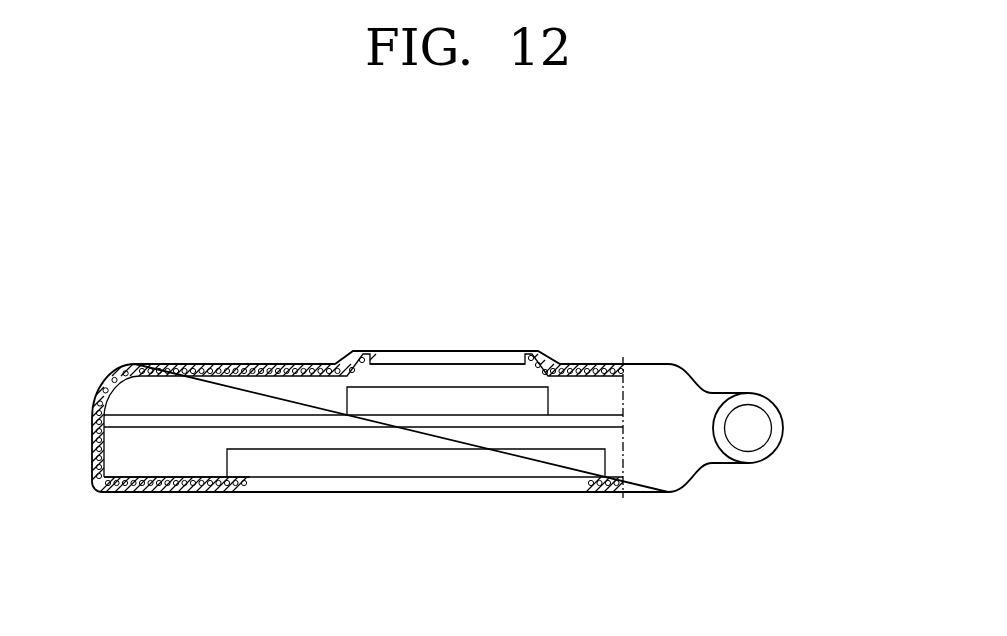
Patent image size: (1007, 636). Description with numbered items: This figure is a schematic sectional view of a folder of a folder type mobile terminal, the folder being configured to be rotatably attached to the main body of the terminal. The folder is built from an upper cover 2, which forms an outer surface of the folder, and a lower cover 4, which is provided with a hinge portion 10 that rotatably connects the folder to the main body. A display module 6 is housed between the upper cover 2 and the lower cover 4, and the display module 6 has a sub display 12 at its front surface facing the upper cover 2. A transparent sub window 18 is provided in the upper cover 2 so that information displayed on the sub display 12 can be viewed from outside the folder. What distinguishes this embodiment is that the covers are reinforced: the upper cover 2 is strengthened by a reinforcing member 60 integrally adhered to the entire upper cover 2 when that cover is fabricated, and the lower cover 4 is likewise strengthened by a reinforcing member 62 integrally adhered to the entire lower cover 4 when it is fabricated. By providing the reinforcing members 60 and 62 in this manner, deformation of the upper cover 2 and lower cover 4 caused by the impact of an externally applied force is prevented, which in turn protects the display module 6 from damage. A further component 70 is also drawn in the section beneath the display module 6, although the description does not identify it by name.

The upper cover 2 is at (275, 363).
The lower cover 4 is at (145, 494).
The display module 6 is at (387, 421).
The hinge portion 10 is at (783, 427).
The sub display 12 is at (445, 395).
The sub window 18 is at (497, 358).
The reinforcing member 60 is at (195, 362).
The reinforcing member 62 is at (193, 493).
The lower component 70 is at (462, 468).